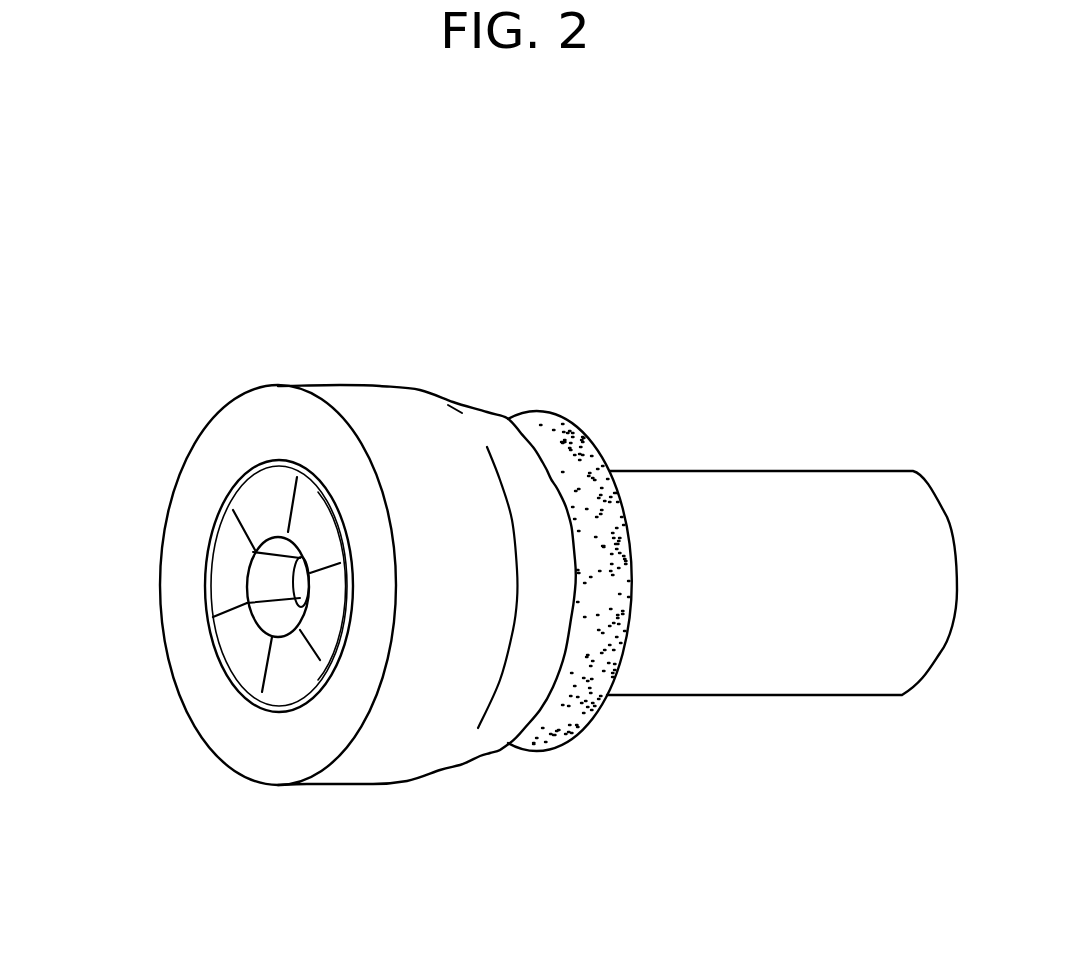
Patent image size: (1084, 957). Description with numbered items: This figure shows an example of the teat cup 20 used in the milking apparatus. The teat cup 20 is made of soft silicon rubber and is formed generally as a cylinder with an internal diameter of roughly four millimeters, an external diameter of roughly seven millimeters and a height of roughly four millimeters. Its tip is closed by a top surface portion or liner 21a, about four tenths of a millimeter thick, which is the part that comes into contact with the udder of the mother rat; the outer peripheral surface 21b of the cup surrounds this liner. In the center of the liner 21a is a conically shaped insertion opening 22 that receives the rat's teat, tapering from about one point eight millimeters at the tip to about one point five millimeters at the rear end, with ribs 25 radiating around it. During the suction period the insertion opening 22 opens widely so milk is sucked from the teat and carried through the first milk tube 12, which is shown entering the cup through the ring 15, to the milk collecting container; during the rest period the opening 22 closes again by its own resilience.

The first milk tube 12 is at (836, 666).
The elastic ring member 15 is at (587, 457).
The teat cup 20 is at (392, 322).
The top surface portion (liner) 21a is at (263, 510).
The outer peripheral surface of tip member 21b is at (428, 428).
The insertion opening 22 is at (272, 577).
The ribs 25 is at (240, 534).